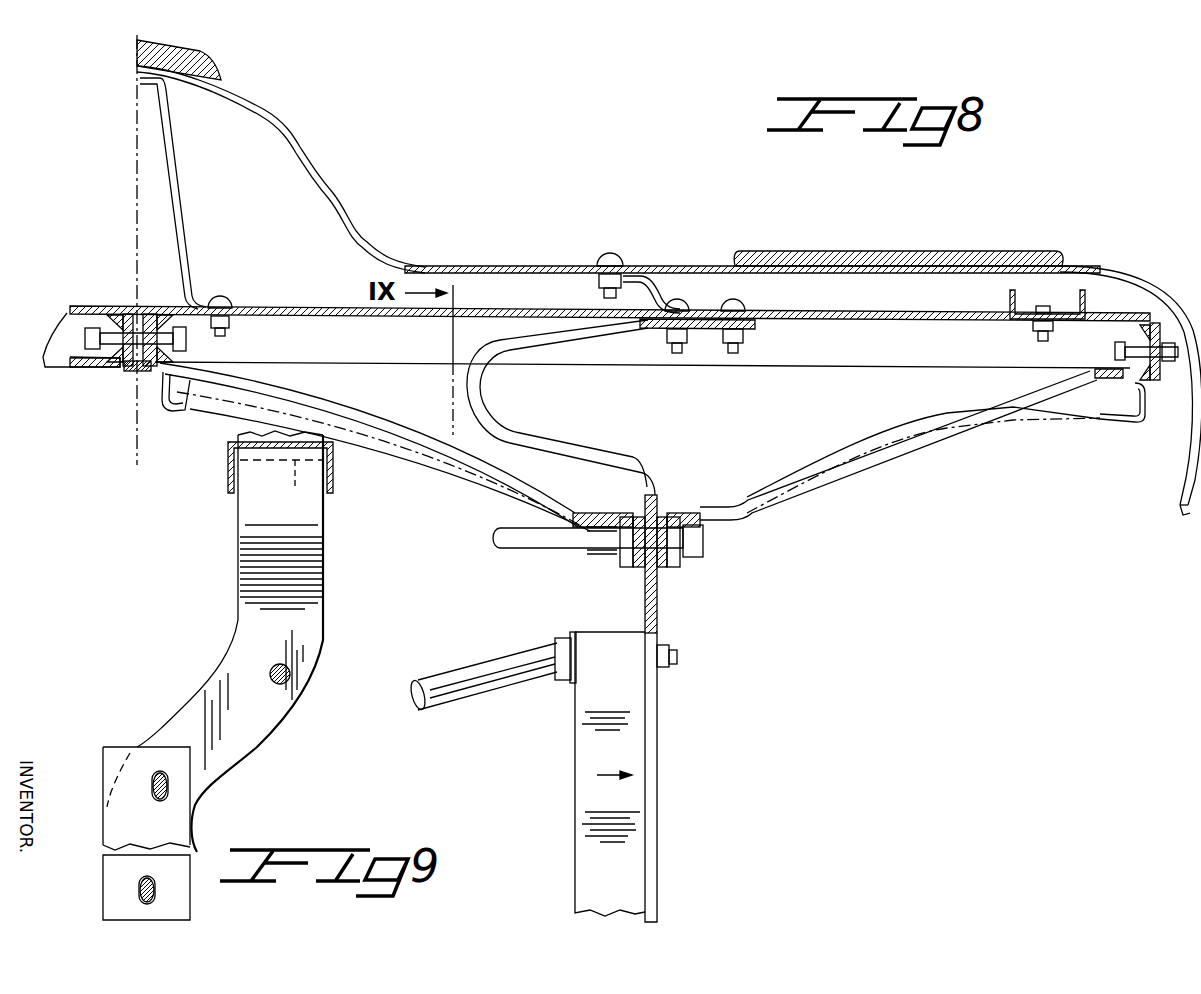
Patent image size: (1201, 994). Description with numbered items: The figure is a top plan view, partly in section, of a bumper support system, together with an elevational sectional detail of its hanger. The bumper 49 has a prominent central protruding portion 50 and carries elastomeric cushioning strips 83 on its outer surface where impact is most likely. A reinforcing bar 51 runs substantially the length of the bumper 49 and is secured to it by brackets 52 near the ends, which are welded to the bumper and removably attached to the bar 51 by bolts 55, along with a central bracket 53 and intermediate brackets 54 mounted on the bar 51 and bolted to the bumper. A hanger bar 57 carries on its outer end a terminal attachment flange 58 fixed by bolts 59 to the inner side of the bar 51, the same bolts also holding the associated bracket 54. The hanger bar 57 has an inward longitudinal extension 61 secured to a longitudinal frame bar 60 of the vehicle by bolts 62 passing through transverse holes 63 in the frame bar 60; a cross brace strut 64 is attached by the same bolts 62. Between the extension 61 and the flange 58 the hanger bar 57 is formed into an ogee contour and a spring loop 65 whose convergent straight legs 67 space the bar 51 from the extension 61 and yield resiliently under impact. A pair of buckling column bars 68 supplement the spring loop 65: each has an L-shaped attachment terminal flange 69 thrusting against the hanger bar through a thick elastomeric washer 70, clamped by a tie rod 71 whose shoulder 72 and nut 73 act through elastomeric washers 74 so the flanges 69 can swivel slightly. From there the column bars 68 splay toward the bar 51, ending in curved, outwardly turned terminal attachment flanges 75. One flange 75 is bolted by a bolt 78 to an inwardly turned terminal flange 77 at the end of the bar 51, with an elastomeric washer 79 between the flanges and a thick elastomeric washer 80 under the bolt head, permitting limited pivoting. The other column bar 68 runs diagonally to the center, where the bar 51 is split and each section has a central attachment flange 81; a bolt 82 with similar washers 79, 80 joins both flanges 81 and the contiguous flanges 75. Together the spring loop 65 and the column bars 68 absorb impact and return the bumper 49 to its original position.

In FIG. 8, the bumper 49 is at (552, 266).
In FIG. 8, the central protruding portion 50 is at (275, 106).
In FIG. 8, the reinforcing bar 51 is at (70, 306).
In FIG. 9, the reinforcing bar 51 is at (280, 455).
In FIG. 8, the brackets 52 is at (1078, 292).
In FIG. 8, the central bracket 53 is at (181, 170).
In FIG. 8, the intermediate brackets 54 is at (656, 298).
In FIG. 9, the intermediate brackets 54 is at (230, 443).
In FIG. 8, the bolts 55 is at (1030, 327).
In FIG. 8, the hanger bar 57 is at (658, 493).
In FIG. 8, the terminal attachment flange 58 is at (700, 330).
In FIG. 9, the terminal attachment flange 58 is at (296, 505).
In FIG. 8, the bolts 59 is at (676, 353).
In FIG. 8, the longitudinal frame bar 60 is at (595, 745).
In FIG. 9, the longitudinal frame bar 60 is at (177, 839).
In FIG. 8, the inward longitudinal extension 61 is at (658, 722).
In FIG. 8, the bolts 62 is at (680, 650).
In FIG. 9, the bolts 62 is at (156, 784).
In FIG. 9, the transverse holes 63 is at (163, 800).
In FIG. 8, the cross brace strut 64 is at (485, 695).
In FIG. 8, the spring loop 65 is at (470, 390).
In FIG. 9, the spring loop 65 is at (305, 542).
In FIG. 8, the legs 67 is at (545, 442).
In FIG. 8, the buckling column bars 68 is at (55, 372).
In FIG. 8, the attachment terminal flange 69 is at (637, 560).
In FIG. 8, the elastomeric washer 70 is at (650, 570).
In FIG. 8, the tie rod 71 is at (500, 530).
In FIG. 9, the tie rod 71 is at (292, 673).
In FIG. 8, the shoulder 72 is at (595, 552).
In FIG. 8, the nut 73 is at (704, 545).
In FIG. 8, the elastomeric washers 74 is at (625, 560).
In FIG. 8, the terminal attachment flange 75 is at (110, 318).
In FIG. 8, the terminal flange 77 is at (1163, 403).
In FIG. 8, the bolt 78 is at (1165, 372).
In FIG. 8, the elastomeric washer 79 is at (125, 363).
In FIG. 8, the elastomeric washer 80 is at (175, 352).
In FIG. 8, the central attachment flange 81 is at (133, 372).
In FIG. 8, the bolt 82 is at (187, 340).
In FIG. 8, the elastomeric cushioning strips 83 is at (218, 66).